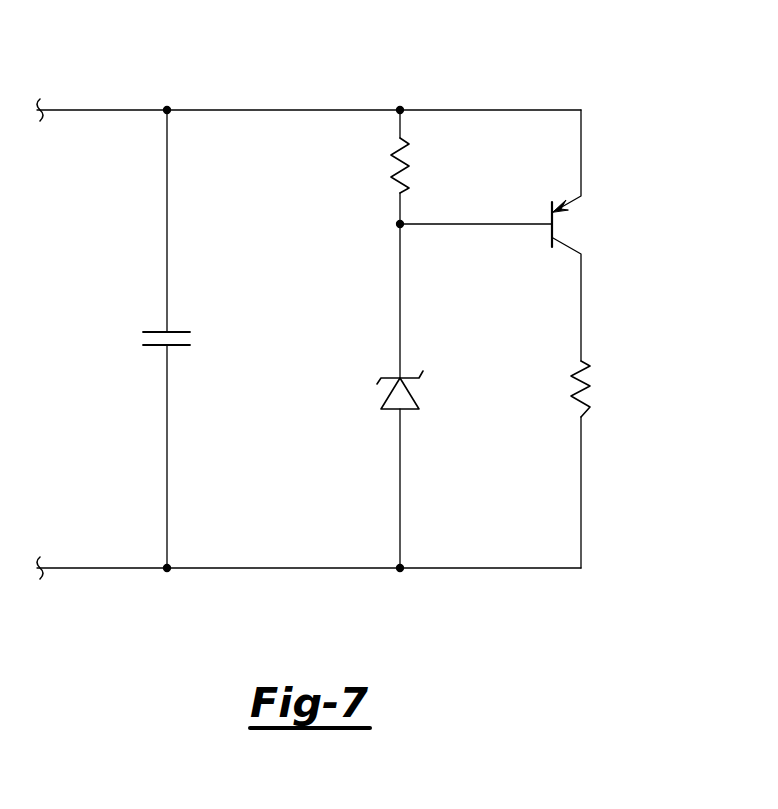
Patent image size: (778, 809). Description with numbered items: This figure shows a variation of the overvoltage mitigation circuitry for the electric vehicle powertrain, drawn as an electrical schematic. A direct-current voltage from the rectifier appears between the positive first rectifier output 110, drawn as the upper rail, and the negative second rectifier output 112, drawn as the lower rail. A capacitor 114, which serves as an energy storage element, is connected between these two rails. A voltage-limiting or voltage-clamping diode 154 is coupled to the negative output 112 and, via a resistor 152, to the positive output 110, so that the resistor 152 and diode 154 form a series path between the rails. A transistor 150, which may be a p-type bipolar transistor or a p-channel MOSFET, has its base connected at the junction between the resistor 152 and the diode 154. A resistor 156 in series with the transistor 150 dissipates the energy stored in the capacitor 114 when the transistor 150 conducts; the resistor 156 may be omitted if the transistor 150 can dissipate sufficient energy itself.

The first rectifier output 110 is at (102, 110).
The second rectifier output 112 is at (103, 569).
The capacitor 114 is at (150, 332).
The transistor 150 is at (558, 240).
The resistor 152 is at (407, 162).
The voltage-limiting or voltage-clamping diode 154 is at (385, 400).
The resistor 156 is at (586, 383).